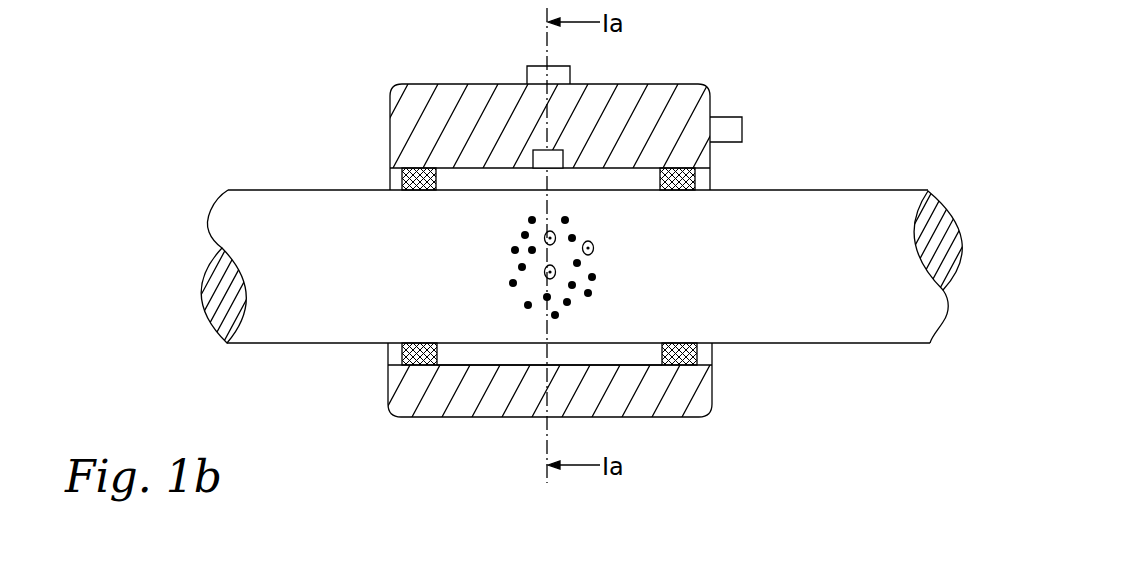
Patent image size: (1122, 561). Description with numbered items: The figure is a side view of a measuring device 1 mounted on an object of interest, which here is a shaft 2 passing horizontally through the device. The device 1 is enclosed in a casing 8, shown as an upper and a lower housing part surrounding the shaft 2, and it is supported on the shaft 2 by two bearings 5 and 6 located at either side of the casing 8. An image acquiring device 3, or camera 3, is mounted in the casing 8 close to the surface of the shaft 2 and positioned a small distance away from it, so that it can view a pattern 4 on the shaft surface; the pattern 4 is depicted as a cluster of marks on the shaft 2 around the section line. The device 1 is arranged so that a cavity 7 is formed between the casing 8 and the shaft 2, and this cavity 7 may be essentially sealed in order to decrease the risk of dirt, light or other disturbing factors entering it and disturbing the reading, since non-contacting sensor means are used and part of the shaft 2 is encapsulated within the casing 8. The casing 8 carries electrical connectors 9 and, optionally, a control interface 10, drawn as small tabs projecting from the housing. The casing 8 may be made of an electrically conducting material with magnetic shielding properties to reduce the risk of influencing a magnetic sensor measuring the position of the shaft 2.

The measuring device 1 is at (258, 63).
The shaft 2 is at (800, 210).
The image acquiring device 3 is at (565, 153).
The pattern 4 is at (603, 255).
The bearing 5 is at (405, 353).
The bearing 6 is at (707, 350).
The cavity 7 is at (502, 356).
The casing 8 is at (412, 128).
The electrical connectors 9 is at (728, 122).
The control interface 10 is at (538, 74).